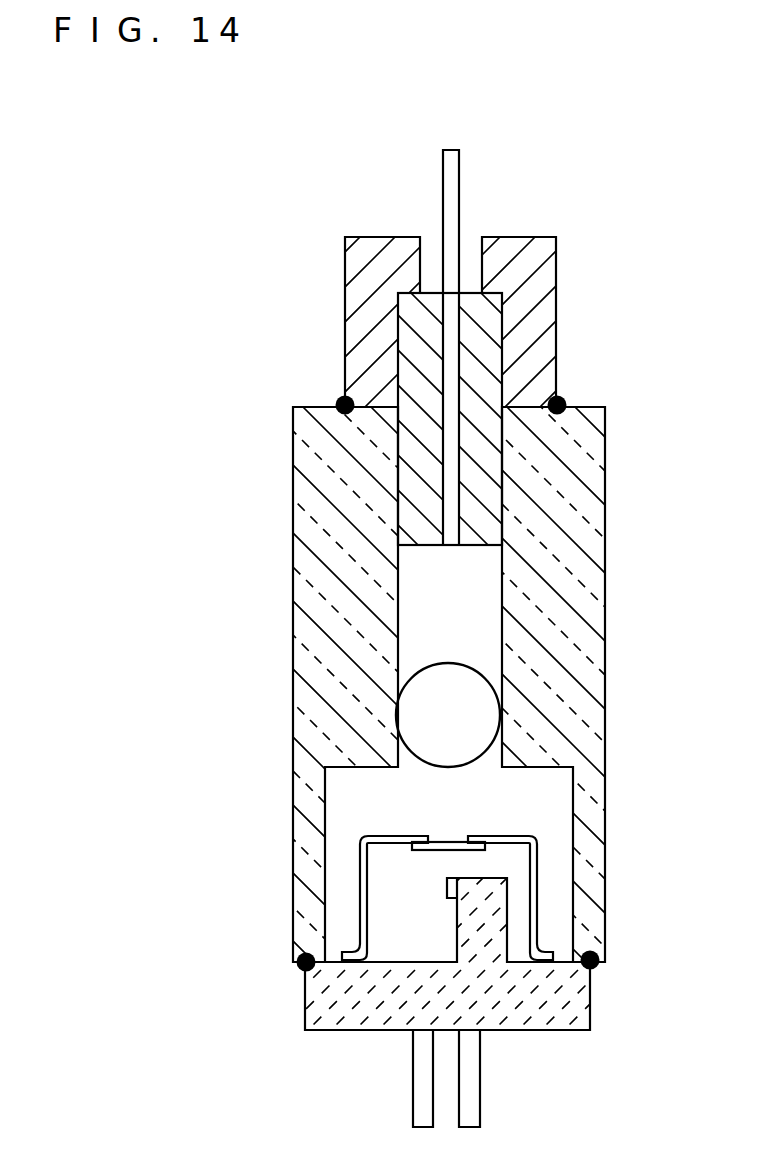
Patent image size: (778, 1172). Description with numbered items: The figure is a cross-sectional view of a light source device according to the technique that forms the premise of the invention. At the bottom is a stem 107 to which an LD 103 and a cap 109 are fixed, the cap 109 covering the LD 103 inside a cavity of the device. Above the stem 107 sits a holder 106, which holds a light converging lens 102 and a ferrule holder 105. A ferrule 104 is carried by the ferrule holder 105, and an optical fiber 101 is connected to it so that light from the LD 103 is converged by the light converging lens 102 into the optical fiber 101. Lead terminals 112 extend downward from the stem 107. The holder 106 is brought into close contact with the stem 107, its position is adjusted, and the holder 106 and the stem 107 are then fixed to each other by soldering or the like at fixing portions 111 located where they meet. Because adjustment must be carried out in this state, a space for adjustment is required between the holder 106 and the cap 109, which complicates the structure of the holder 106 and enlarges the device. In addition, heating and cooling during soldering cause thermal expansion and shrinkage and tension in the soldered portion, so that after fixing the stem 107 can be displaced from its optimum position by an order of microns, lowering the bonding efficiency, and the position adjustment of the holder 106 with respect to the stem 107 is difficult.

The optical fiber 101 is at (453, 177).
The light converging lens 102 is at (478, 695).
The LD 103 is at (453, 877).
The ferrule 104 is at (483, 312).
The ferrule holder 105 is at (547, 342).
The holder 106 is at (595, 523).
The stem 107 is at (580, 1013).
The cap 109 is at (363, 839).
The fixing portions 111 is at (299, 967).
The lead terminals 112 is at (472, 1095).